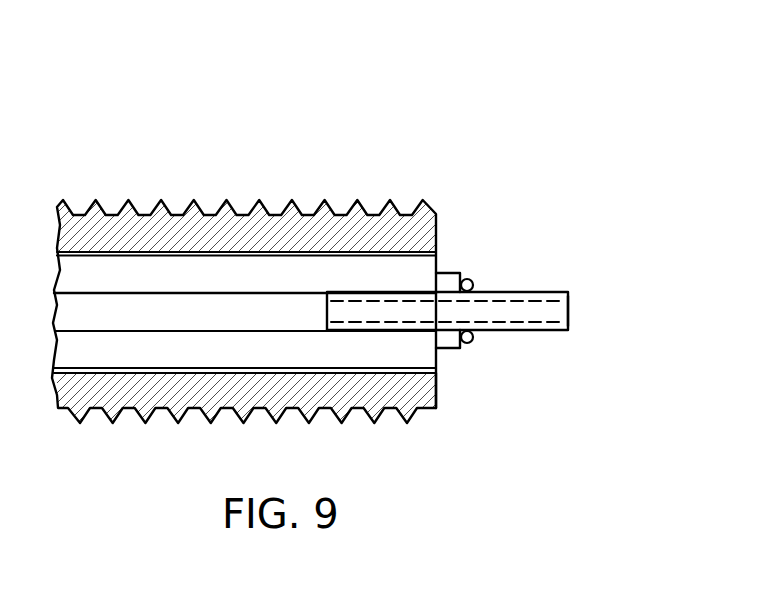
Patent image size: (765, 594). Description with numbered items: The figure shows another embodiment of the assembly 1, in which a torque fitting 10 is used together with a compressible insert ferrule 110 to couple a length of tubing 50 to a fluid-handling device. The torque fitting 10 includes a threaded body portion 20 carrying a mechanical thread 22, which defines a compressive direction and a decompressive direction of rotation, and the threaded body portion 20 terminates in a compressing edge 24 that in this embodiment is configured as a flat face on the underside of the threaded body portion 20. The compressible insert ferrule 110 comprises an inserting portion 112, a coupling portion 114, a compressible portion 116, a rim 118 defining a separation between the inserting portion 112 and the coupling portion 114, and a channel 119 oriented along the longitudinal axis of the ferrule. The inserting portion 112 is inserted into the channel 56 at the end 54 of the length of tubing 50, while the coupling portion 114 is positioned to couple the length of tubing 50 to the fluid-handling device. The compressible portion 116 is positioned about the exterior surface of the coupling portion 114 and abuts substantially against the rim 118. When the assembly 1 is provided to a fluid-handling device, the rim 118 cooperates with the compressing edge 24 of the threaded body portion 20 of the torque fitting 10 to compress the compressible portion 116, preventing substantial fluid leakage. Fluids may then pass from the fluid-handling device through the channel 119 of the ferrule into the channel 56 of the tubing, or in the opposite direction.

The assembly 1 is at (448, 137).
The torque fitting 10 is at (187, 457).
The threaded body portion 20 is at (308, 178).
The mechanical thread 22 is at (313, 417).
The compressing edge 24 is at (436, 390).
The length of tubing 50 is at (156, 273).
The end of the length of tubing 54 is at (427, 358).
The channel of the length of tubing 56 is at (253, 305).
The compressible insert ferrule 110 is at (523, 227).
The inserting portion 112 is at (388, 297).
The coupling portion 114 is at (527, 295).
The compressible portion 116 is at (474, 339).
The rim 118 is at (450, 280).
The channel of the compressible insert ferrule 119 is at (566, 312).